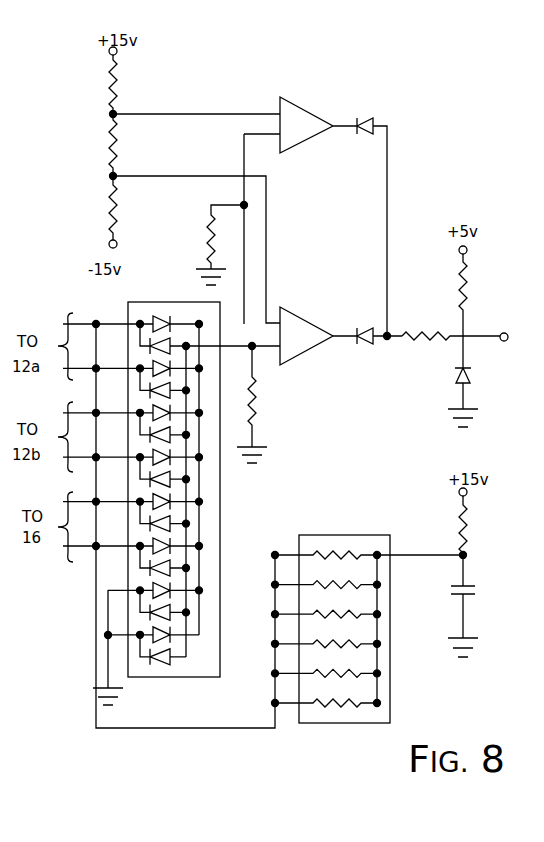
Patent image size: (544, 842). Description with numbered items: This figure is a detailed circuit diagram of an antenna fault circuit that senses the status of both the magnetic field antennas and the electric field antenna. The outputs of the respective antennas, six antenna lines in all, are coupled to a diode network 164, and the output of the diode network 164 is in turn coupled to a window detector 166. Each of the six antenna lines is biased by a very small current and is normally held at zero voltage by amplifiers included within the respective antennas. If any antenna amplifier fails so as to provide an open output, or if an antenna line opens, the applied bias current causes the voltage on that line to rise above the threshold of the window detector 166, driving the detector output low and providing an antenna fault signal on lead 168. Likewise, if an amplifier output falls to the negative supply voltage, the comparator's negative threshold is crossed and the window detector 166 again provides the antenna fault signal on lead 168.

The diode network 164 is at (187, 302).
The window detector 166 is at (338, 243).
The lead 168 is at (493, 333).